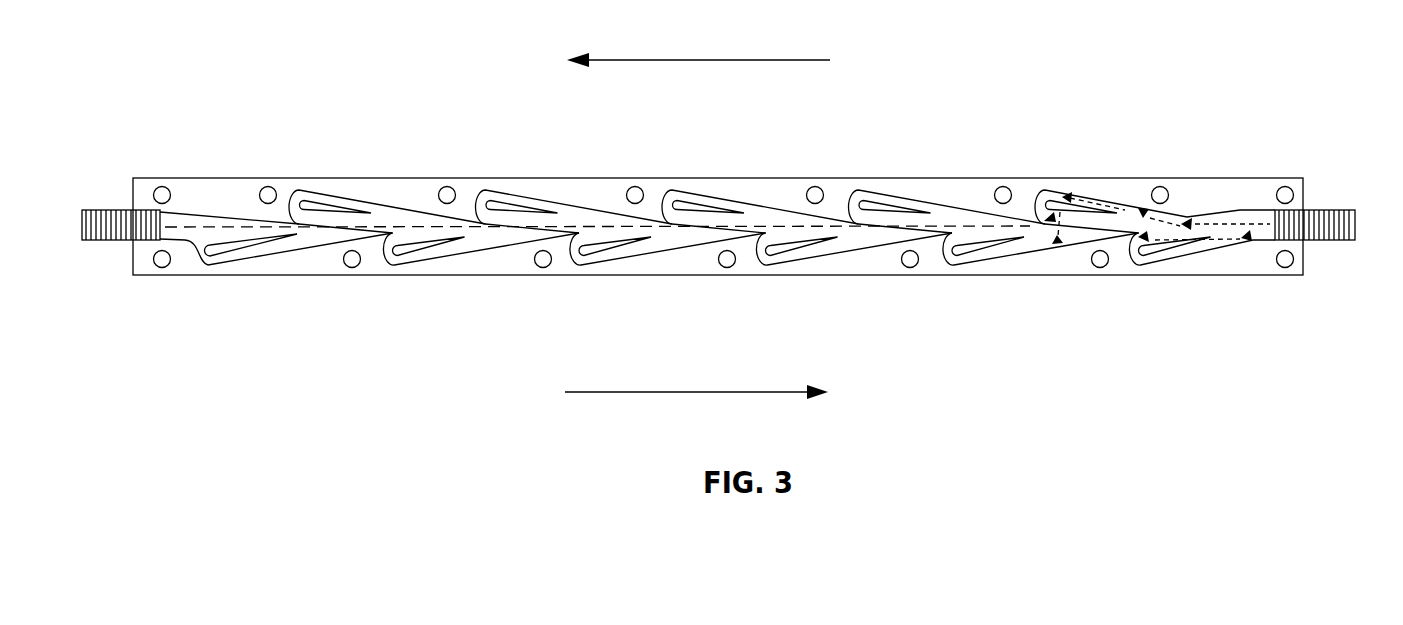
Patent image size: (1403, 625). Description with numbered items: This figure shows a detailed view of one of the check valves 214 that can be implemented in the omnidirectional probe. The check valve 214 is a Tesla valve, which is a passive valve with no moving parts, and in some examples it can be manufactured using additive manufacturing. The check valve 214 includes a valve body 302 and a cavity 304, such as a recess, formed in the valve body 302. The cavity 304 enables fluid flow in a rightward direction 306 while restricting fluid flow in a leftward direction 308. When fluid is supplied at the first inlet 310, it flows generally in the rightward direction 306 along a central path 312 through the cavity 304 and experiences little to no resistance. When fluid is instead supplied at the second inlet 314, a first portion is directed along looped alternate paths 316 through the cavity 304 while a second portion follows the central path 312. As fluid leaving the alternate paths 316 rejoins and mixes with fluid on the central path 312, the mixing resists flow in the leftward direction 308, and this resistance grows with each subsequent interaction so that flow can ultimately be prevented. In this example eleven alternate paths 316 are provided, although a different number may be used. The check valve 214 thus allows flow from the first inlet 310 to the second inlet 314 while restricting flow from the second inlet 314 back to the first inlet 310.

The check valve 214 is at (228, 94).
The valve body 302 is at (570, 177).
The cavity 304 is at (672, 200).
The rightward direction 306 is at (690, 392).
The leftward direction 308 is at (685, 60).
The first inlet 310 is at (80, 223).
The central path 312 is at (497, 226).
The second inlet 314 is at (1358, 222).
The alternate paths 316 is at (1145, 265).